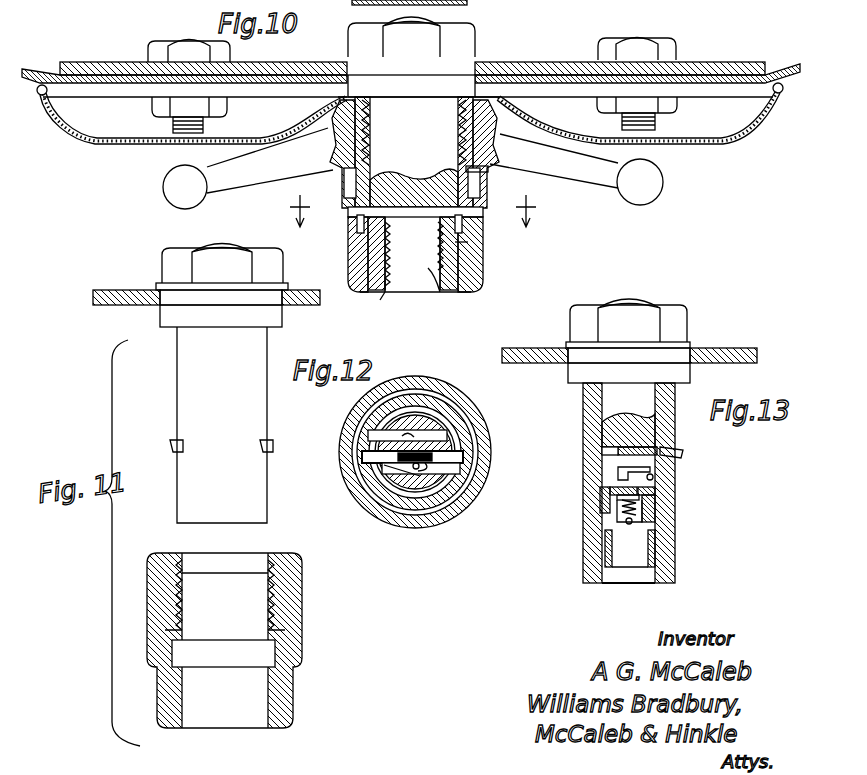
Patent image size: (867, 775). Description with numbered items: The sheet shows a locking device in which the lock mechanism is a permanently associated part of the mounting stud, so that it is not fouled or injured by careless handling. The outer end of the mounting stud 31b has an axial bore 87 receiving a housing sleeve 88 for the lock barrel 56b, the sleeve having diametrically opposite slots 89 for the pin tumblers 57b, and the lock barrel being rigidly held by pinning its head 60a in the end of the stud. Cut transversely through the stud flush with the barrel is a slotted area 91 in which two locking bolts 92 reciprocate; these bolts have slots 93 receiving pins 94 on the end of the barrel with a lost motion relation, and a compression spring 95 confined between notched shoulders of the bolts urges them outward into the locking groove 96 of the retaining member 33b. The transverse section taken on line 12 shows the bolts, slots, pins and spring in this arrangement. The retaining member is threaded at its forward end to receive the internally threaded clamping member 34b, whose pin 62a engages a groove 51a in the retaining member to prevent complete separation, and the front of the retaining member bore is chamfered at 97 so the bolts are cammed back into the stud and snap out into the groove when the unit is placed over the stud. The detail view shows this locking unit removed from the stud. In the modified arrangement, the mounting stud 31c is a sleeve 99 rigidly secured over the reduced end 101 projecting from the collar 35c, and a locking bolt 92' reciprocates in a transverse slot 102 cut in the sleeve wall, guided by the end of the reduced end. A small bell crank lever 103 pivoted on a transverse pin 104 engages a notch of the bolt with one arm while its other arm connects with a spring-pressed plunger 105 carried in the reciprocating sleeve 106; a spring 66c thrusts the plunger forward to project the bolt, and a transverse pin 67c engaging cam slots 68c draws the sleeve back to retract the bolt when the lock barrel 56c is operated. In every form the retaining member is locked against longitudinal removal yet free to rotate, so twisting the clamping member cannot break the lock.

In FIG. 10, the mounting stud 31b is at (440, 107).
In FIG. 10, the clamping member 34b is at (480, 112).
In FIG. 10, the chamfer 97 is at (365, 135).
In FIG. 11, the chamfer 97 is at (165, 565).
In FIG. 10, the groove 51a is at (343, 186).
In FIG. 10, the section line 12 is at (411, 211).
In FIG. 10, the pin 62a is at (488, 172).
In FIG. 10, the locking bolts 92 is at (382, 226).
In FIG. 11, the locking bolts 92 is at (200, 444).
In FIG. 12, the locking bolts 92 is at (415, 452).
In FIG. 10, the slots 89 is at (355, 246).
In FIG. 10, the axial bore 87 is at (390, 262).
In FIG. 10, the retaining member 33b is at (352, 267).
In FIG. 10, the slotted area 91 is at (462, 214).
In FIG. 10, the locking groove 96 is at (442, 240).
In FIG. 11, the locking groove 96 is at (223, 653).
In FIG. 10, the housing sleeve 88 is at (458, 258).
In FIG. 10, the pin tumblers 57b is at (383, 288).
In FIG. 10, the head 60a is at (408, 290).
In FIG. 10, the lock barrel 56b is at (440, 280).
In FIG. 12, the slots 93 is at (404, 444).
In FIG. 12, the pins 94 is at (412, 468).
In FIG. 12, the compression spring 95 is at (463, 456).
In FIG. 13, the collar 35c is at (690, 374).
In FIG. 13, the mounting stud 31c is at (578, 413).
In FIG. 13, the reduced end 101 is at (606, 426).
In FIG. 13, the sleeve 99 is at (602, 451).
In FIG. 13, the transverse slot 102 is at (684, 450).
In FIG. 13, the locking bolt 92' is at (668, 460).
In FIG. 13, the bell crank lever 103 is at (618, 469).
In FIG. 13, the transverse pin 104 is at (655, 478).
In FIG. 13, the spring-pressed plunger 105 is at (603, 490).
In FIG. 13, the reciprocating sleeve 106 is at (646, 498).
In FIG. 13, the spring 66c is at (617, 510).
In FIG. 13, the cam slots 68c is at (660, 512).
In FIG. 13, the transverse pin 67c is at (626, 524).
In FIG. 13, the lock barrel 56c is at (635, 548).